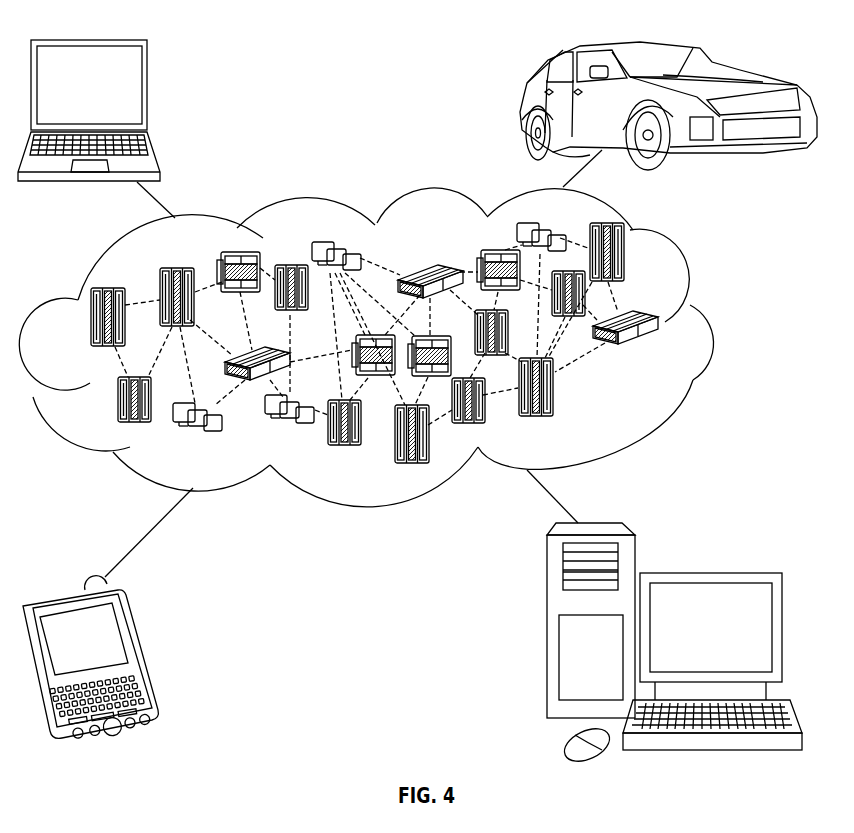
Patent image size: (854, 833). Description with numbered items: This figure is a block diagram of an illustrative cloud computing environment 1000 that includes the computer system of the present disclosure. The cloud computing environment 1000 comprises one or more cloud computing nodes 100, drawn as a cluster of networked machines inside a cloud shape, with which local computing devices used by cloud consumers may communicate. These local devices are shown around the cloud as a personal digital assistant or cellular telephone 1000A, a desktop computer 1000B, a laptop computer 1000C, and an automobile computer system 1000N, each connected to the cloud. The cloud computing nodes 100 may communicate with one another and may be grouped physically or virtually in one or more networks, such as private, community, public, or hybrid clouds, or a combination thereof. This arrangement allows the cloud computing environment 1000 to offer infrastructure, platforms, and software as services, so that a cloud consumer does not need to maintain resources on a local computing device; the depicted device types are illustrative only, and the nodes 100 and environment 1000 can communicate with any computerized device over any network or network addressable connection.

The cloud computing nodes 100 is at (666, 352).
The cloud computing environment 1000 is at (708, 327).
The personal digital assistant (PDA) or cellular telephone 1000A is at (143, 652).
The desktop computer 1000B is at (710, 572).
The laptop computer 1000C is at (148, 93).
The automobile computer system 1000N is at (522, 108).